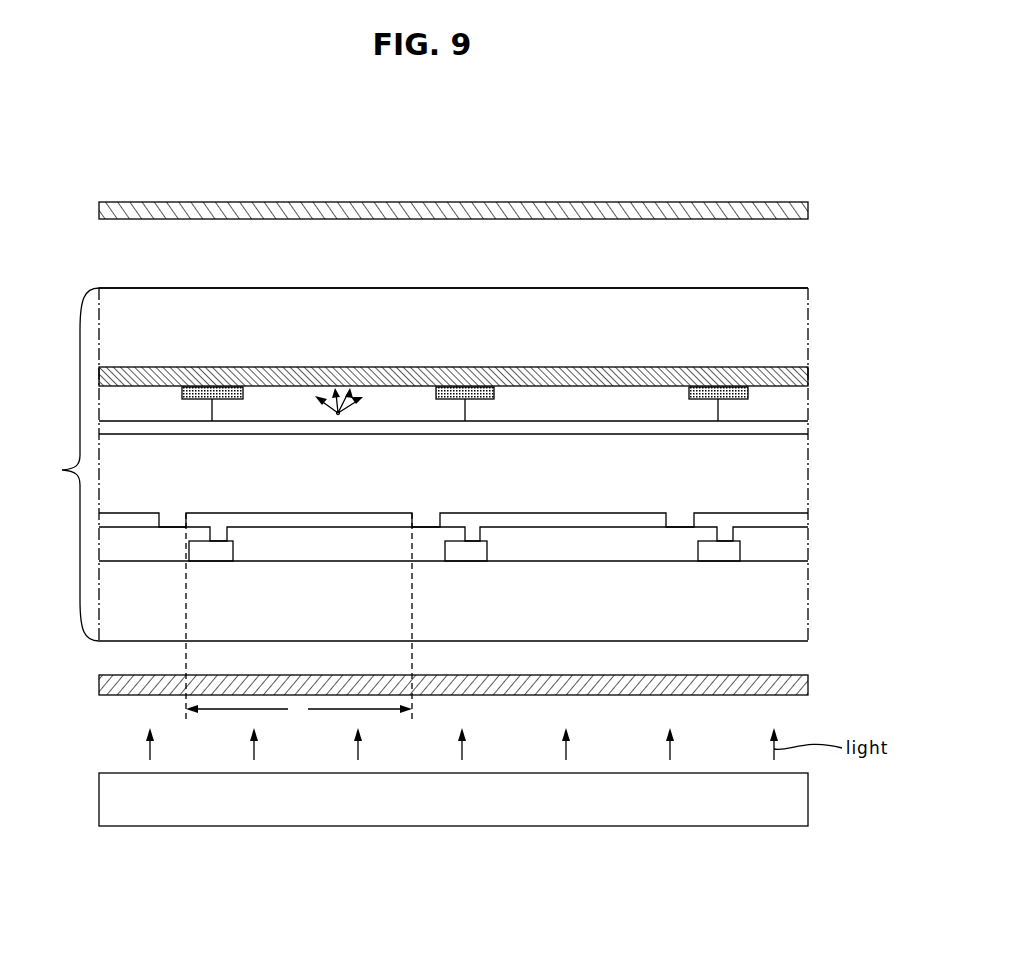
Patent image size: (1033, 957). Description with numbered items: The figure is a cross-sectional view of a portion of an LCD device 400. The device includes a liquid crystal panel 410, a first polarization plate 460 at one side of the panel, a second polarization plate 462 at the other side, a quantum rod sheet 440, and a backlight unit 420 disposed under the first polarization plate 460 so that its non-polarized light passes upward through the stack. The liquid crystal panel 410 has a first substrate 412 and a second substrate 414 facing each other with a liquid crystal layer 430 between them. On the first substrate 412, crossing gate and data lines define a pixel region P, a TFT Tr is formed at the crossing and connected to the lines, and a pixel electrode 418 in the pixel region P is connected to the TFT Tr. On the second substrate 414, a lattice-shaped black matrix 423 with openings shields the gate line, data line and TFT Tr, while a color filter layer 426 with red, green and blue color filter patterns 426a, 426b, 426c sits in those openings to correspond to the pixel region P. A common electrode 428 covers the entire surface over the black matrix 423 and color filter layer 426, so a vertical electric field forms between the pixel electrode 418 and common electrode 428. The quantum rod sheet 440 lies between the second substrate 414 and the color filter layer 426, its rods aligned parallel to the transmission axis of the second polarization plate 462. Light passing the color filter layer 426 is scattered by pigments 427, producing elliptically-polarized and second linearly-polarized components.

The LCD device 400 is at (775, 164).
The liquid crystal panel 410 is at (452, 464).
The first substrate 412 is at (453, 601).
The second substrate 414 is at (453, 312).
The pixel electrode 418 is at (310, 522).
The backlight unit 420 is at (793, 800).
The black matrix 423 is at (212, 387).
The color filter layer 426 is at (605, 327).
The red color filter pattern 426a is at (405, 395).
The green color filter pattern 426b is at (528, 407).
The blue color filter pattern 426c is at (760, 395).
The pigments 427 is at (338, 415).
The common electrode 428 is at (793, 427).
The liquid crystal layer 430 is at (793, 477).
The quantum rod sheet 440 is at (133, 367).
The first polarization plate 460 is at (712, 686).
The second polarization plate 462 is at (604, 208).
The TFT Tr is at (210, 553).
The pixel region P is at (299, 616).